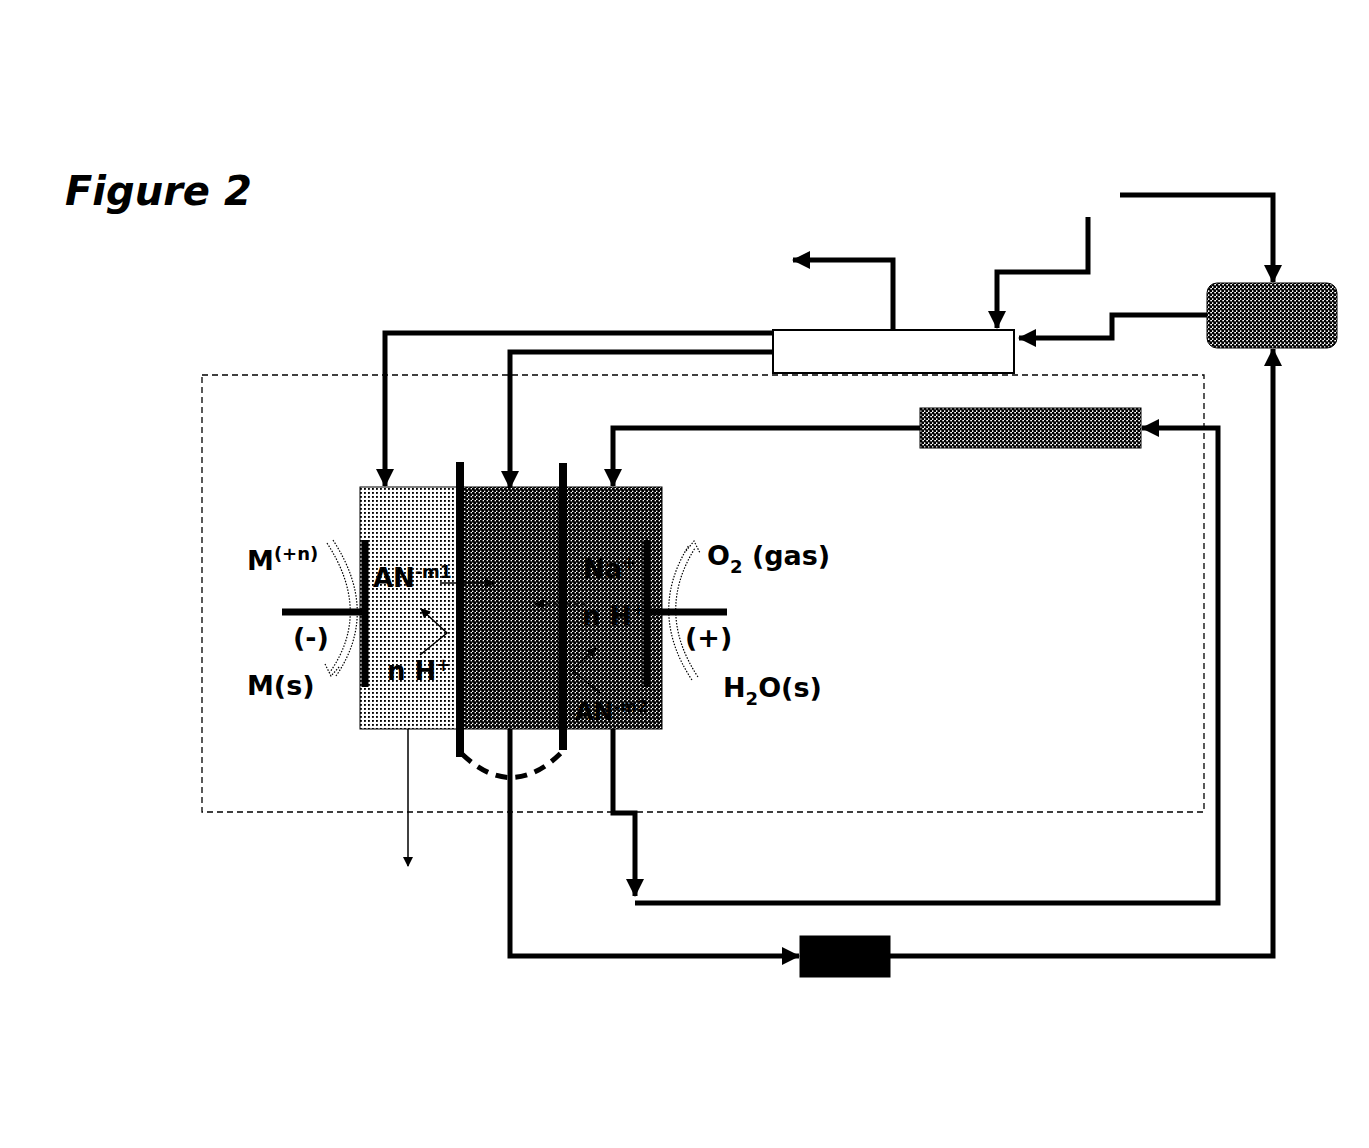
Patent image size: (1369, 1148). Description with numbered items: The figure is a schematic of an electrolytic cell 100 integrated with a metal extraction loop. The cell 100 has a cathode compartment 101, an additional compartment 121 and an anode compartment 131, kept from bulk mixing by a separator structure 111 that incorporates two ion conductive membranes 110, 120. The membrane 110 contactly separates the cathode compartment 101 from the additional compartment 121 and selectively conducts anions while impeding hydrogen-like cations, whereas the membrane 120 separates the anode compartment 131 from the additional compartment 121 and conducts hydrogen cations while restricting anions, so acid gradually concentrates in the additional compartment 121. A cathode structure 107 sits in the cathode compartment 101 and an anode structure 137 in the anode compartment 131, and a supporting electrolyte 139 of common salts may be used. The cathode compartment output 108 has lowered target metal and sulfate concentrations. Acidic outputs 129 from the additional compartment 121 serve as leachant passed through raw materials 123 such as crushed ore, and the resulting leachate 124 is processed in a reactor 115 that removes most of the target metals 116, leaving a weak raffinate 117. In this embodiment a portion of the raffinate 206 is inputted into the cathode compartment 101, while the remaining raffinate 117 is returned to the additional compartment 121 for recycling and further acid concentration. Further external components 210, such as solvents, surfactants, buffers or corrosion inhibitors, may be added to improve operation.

The electrolytic cell 100 is at (322, 731).
The cathode compartment 101 is at (410, 608).
The cathode structure 107 is at (286, 627).
The cathode compartment output 108 is at (395, 822).
The ion conductive membrane 110 is at (458, 457).
The separator structure 111 is at (460, 752).
The reactor 115 is at (893, 351).
The target metals 116 is at (910, 266).
The raffinate 117 is at (660, 352).
The ion conductive membrane 120 is at (566, 453).
The additional compartment 121 is at (512, 608).
The raw materials 123 is at (1272, 315).
The leachate 124 is at (1093, 336).
The outputs 129 is at (845, 956).
The anode compartment 131 is at (613, 608).
The anode structure 137 is at (712, 606).
The supporting electrolyte 139 is at (1030, 428).
The raffinate portion 206 is at (403, 322).
The external components 210 is at (1147, 188).